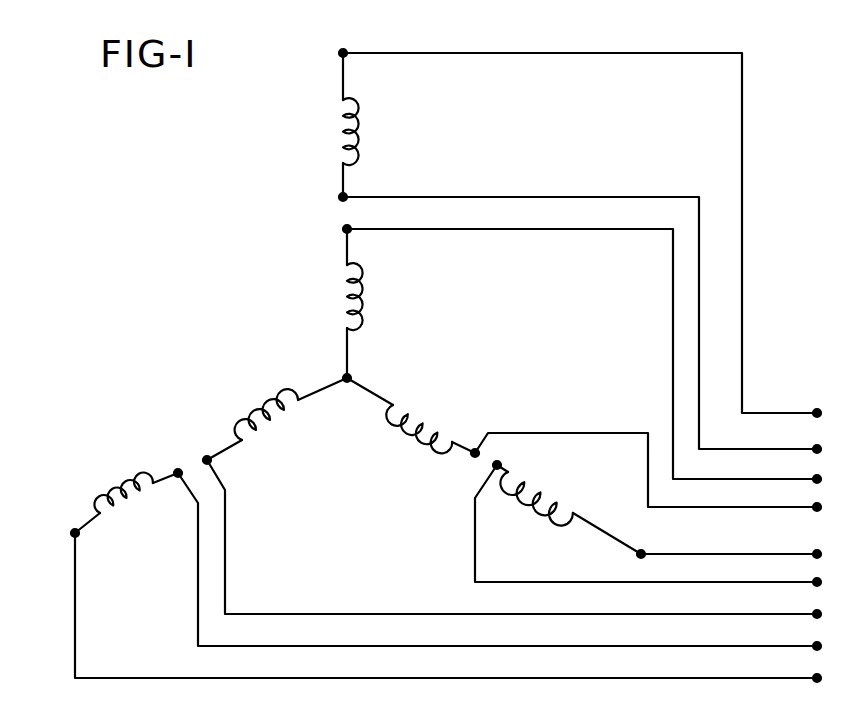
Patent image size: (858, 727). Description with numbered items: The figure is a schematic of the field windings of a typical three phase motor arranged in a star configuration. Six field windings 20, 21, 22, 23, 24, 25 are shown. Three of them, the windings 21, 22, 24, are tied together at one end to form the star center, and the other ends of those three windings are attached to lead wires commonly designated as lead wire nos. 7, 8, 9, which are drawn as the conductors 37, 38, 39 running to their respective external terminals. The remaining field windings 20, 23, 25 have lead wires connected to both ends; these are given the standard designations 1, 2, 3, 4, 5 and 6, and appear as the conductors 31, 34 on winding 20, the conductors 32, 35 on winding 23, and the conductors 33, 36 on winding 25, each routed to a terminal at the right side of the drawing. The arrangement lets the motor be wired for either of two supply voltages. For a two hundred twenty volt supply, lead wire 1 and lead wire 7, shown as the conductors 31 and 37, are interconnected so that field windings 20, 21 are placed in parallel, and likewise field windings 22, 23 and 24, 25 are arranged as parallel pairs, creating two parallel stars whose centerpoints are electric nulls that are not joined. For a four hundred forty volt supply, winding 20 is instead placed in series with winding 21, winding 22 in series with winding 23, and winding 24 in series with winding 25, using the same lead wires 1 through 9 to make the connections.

The lead wire 1 is at (580, 233).
The lead wire 2 is at (739, 545).
The lead wire 3 is at (447, 600).
The lead wire 4 is at (580, 324).
The lead wire 5 is at (667, 520).
The lead wire 6 is at (502, 550).
The lead wire 7 is at (582, 355).
The lead wire 8 is at (652, 484).
The lead wire 9 is at (517, 527).
The field winding 20 is at (353, 131).
The field winding 21 is at (357, 294).
The field winding 22 is at (425, 430).
The field winding 23 is at (546, 504).
The field winding 24 is at (262, 408).
The field winding 25 is at (118, 501).
The lead wire 31 is at (742, 268).
The lead wire 32 is at (761, 552).
The lead wire 33 is at (75, 592).
The lead wire 34 is at (565, 197).
The lead wire 35 is at (475, 553).
The lead wire 36 is at (198, 590).
The lead wire 37 is at (673, 263).
The lead wire 38 is at (558, 433).
The lead wire 39 is at (225, 578).